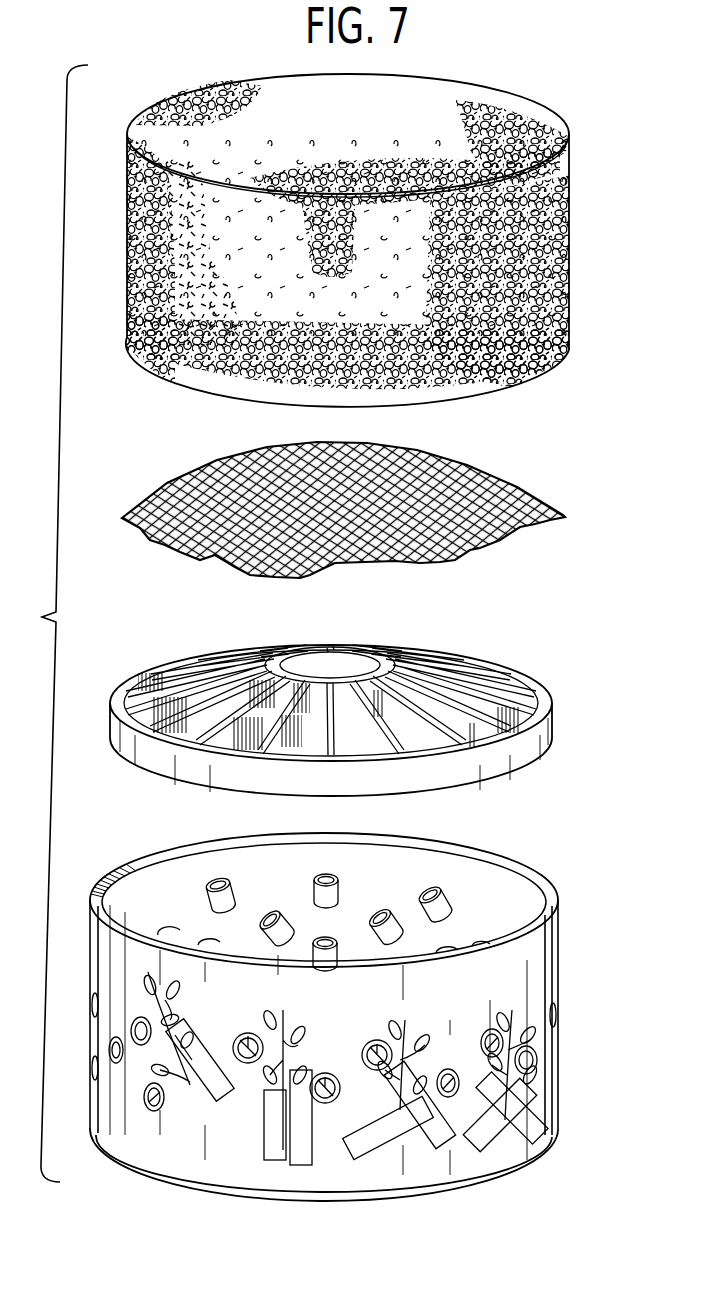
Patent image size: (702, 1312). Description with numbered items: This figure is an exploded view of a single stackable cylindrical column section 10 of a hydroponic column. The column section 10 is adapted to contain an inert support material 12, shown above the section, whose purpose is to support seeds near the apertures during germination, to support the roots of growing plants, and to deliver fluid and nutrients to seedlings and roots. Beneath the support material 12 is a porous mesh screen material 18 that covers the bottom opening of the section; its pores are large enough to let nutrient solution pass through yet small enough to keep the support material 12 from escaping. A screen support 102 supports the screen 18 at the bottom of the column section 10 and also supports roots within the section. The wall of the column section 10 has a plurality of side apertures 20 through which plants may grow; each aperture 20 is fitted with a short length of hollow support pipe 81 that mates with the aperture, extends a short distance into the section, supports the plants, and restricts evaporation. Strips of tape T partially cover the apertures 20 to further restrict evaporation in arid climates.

The inert support material 12 is at (572, 182).
The porous mesh screen material 18 is at (553, 498).
The screen support 102 is at (536, 737).
The column section 10 is at (354, 1017).
The hollow support pipe 81 is at (333, 880).
The side aperture 20 is at (560, 1018).
The tape strips T is at (543, 1112).